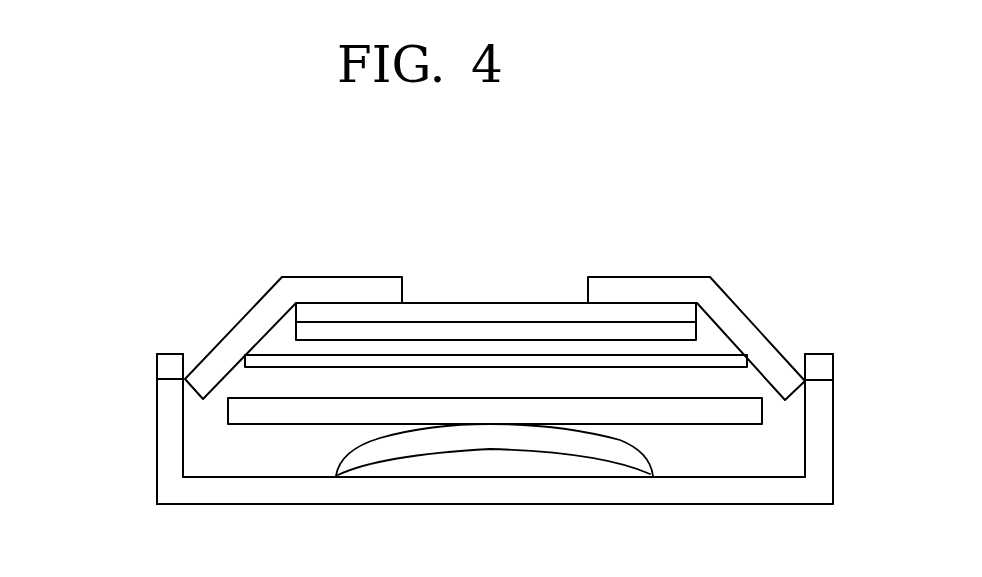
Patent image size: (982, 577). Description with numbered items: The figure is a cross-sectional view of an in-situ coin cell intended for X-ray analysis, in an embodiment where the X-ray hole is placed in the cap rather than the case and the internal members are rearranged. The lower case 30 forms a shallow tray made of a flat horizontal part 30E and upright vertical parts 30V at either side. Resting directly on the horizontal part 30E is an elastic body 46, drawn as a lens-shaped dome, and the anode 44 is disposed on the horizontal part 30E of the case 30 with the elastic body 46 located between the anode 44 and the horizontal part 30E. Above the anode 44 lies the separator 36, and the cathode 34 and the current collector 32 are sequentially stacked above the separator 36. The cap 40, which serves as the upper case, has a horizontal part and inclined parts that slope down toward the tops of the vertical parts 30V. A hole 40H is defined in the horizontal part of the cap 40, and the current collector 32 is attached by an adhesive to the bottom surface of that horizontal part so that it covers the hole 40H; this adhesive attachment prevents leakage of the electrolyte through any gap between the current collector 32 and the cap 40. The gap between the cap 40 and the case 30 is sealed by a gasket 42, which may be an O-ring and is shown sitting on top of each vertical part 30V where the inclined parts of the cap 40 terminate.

The case 30 is at (431, 454).
The vertical part 30V is at (163, 447).
The horizontal part 30E is at (203, 496).
The current collector 32 is at (617, 313).
The cathode 34 is at (651, 331).
The separator 36 is at (726, 360).
The cap 40 is at (312, 288).
The hole 40H is at (403, 291).
The gasket 42 is at (171, 362).
The anode 44 is at (704, 428).
The elastic body 46 is at (588, 448).